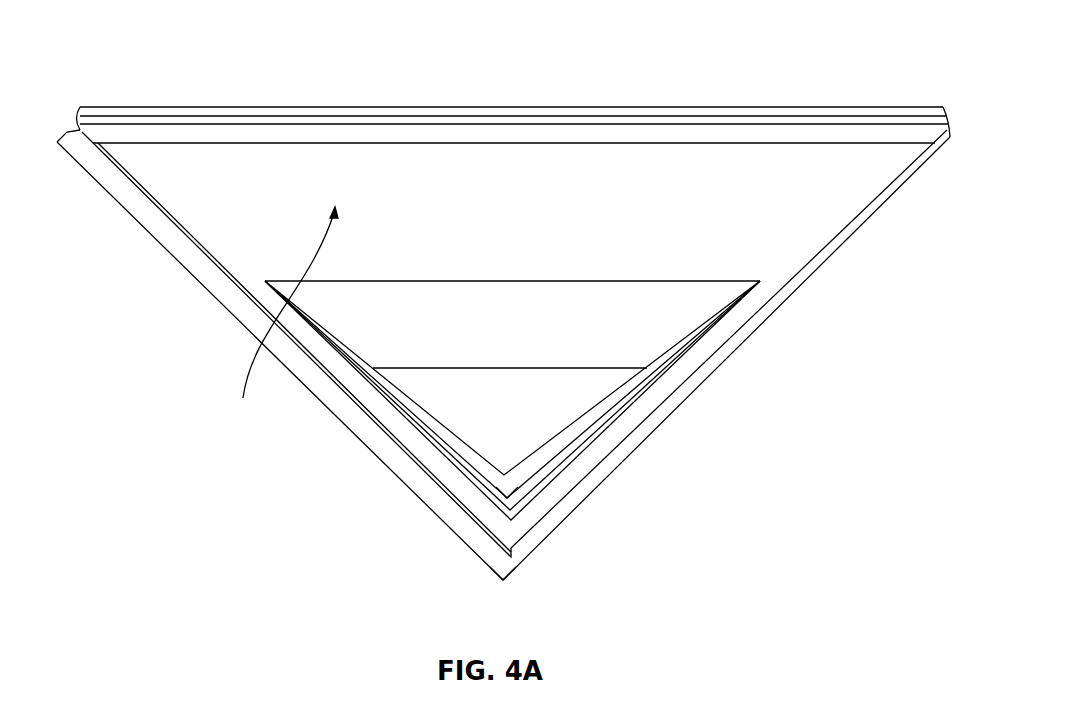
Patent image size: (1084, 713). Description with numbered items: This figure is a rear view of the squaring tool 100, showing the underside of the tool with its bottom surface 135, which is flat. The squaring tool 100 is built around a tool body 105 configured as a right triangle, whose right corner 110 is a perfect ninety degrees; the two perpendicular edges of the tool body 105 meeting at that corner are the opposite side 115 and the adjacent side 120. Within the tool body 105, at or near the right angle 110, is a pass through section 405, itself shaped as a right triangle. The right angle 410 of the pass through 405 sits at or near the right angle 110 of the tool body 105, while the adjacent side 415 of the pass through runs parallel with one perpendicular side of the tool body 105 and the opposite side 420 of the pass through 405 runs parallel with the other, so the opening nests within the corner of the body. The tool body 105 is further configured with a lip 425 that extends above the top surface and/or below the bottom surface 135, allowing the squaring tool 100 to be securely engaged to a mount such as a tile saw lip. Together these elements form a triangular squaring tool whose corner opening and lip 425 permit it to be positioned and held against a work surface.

The squaring tool 100 is at (133, 45).
The tool body 105 is at (133, 227).
The right corner 110 is at (518, 563).
The opposite side 115 is at (240, 330).
The adjacent side 120 is at (808, 272).
The bottom surface 135 is at (279, 317).
The pass through section 405 is at (423, 378).
The right angle of the pass through 410 is at (504, 485).
The adjacent side of the pass through 415 is at (445, 428).
The opposite side of the pass through 420 is at (602, 401).
The lip 425 is at (443, 520).